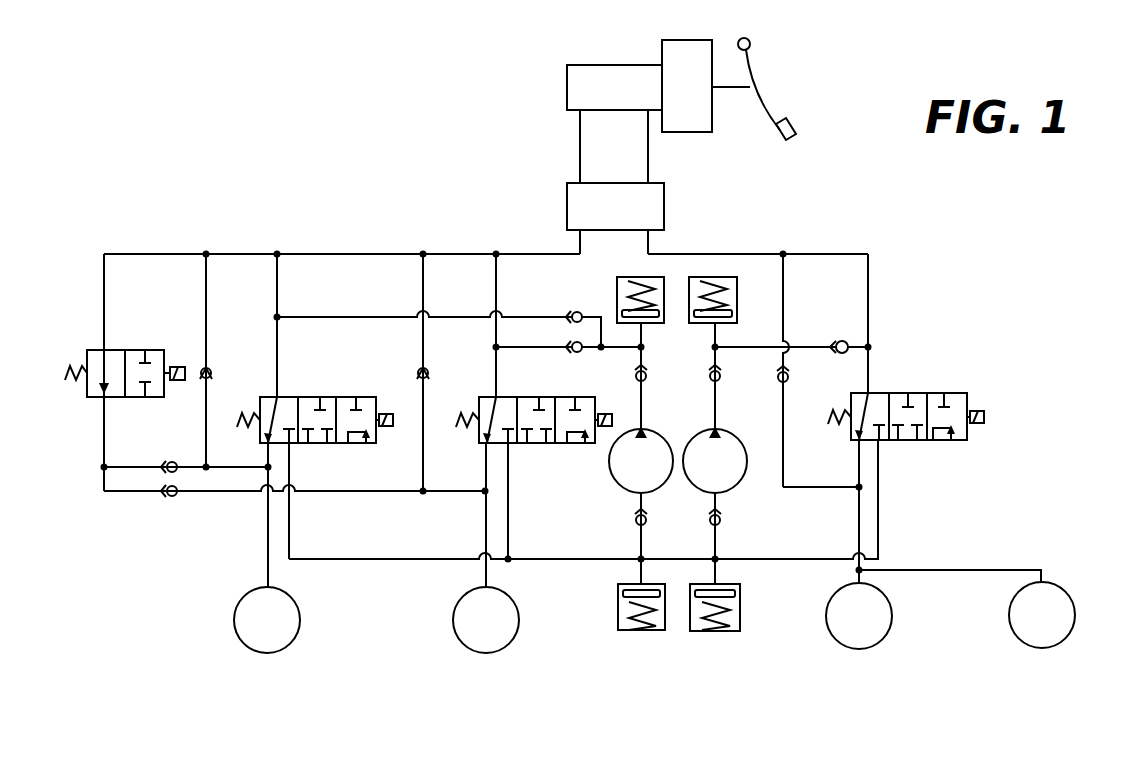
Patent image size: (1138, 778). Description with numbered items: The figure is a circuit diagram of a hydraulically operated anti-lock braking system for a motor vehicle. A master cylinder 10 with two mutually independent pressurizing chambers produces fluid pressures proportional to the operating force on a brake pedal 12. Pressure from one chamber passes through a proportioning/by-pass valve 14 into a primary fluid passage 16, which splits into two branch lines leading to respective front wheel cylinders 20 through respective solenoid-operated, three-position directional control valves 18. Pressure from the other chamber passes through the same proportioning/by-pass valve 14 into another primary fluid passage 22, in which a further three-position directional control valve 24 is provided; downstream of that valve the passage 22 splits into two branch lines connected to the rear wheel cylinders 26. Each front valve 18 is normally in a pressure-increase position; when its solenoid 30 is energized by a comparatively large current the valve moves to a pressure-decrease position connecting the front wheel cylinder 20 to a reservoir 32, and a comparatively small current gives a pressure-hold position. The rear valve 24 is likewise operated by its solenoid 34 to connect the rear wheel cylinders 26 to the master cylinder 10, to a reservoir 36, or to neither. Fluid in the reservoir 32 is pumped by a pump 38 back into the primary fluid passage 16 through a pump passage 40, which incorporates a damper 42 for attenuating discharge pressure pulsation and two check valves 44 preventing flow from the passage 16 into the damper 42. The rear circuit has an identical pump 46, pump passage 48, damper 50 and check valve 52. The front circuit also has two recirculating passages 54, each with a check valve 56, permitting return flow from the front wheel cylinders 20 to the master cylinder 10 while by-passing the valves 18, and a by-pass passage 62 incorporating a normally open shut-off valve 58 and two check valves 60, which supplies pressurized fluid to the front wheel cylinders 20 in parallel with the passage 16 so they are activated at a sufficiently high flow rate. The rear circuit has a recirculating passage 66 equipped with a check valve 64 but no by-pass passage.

The master cylinder 10 is at (602, 70).
The brake pedal 12 is at (762, 108).
The proportioning/by-pass valve 14 is at (657, 207).
The primary fluid passage 16 is at (356, 254).
The solenoid-operated three-position directional control valve 18 is at (322, 397).
The front wheel cylinder 20 is at (292, 628).
The primary fluid passage 22 is at (762, 254).
The solenoid-operated three-position directional control valve 24 is at (895, 393).
The rear wheel cylinder 26 is at (880, 628).
The solenoid 30 is at (388, 415).
The reservoir 32 is at (617, 620).
The solenoid 34 is at (966, 410).
The reservoir 36 is at (740, 620).
The pump 38 is at (628, 483).
The pump passage 40 is at (645, 412).
The damper 42 is at (617, 285).
The check valve 44 is at (572, 311).
The pump 46 is at (738, 478).
The pump passage 48 is at (746, 349).
The damper 50 is at (738, 297).
The check valve 52 is at (845, 355).
The recirculating passage 54 is at (208, 290).
The check valve 56 is at (212, 368).
The normally open shut-off valve 58 is at (141, 350).
The check valve 60 is at (176, 462).
The by-pass passage 62 is at (106, 300).
The check valve 64 is at (780, 384).
The recirculating passage 66 is at (822, 490).